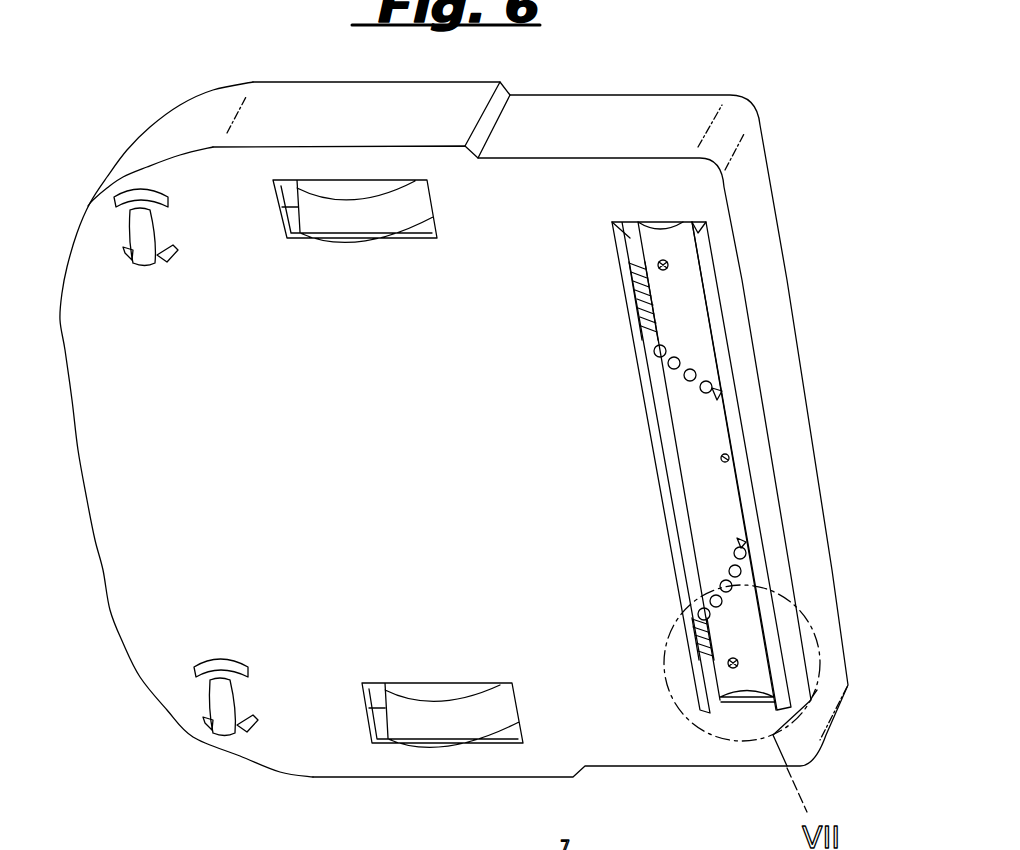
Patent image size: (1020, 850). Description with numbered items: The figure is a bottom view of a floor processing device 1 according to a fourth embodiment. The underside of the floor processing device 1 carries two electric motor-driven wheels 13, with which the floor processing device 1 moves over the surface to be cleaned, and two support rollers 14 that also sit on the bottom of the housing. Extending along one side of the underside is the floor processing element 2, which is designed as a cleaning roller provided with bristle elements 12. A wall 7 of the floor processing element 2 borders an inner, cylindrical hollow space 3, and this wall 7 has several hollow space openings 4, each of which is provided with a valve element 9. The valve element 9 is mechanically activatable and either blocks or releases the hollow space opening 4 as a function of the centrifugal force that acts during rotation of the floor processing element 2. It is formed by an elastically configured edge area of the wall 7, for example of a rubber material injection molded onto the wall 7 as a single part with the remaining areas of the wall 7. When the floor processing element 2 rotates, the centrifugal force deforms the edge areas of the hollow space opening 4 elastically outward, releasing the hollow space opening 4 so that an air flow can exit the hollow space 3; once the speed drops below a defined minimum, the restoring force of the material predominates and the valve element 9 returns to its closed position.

The floor processing device 1 is at (786, 131).
The floor processing element 2 is at (715, 416).
The hollow space 3 is at (688, 318).
The hollow space opening 4 is at (660, 268).
The wall 7 is at (702, 340).
The valve element 9 is at (652, 258).
The bristle elements 12 is at (716, 392).
The wheels 13 is at (337, 200).
The support rollers 14 is at (138, 230).